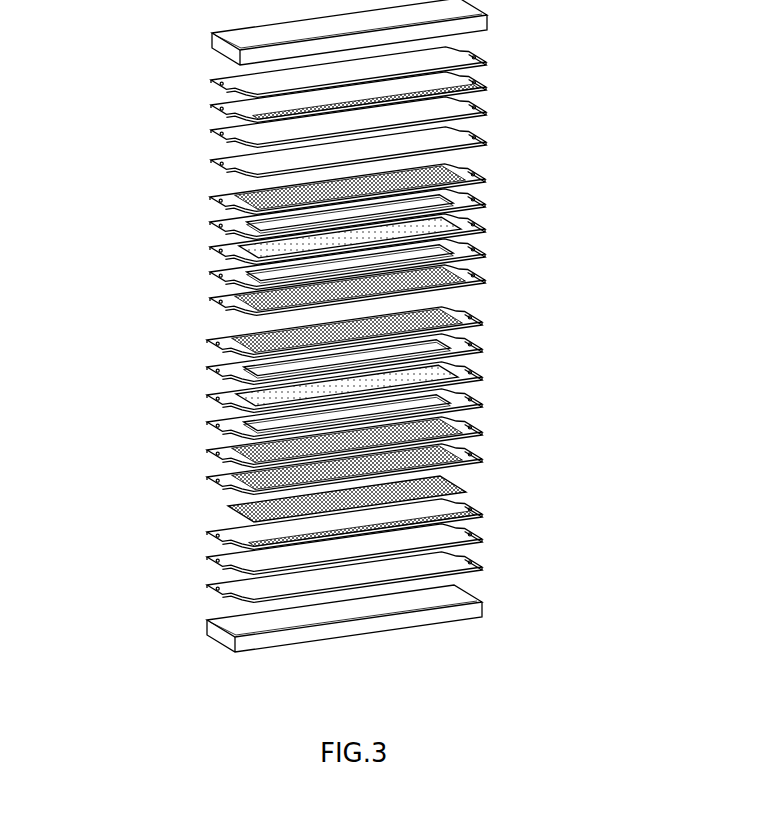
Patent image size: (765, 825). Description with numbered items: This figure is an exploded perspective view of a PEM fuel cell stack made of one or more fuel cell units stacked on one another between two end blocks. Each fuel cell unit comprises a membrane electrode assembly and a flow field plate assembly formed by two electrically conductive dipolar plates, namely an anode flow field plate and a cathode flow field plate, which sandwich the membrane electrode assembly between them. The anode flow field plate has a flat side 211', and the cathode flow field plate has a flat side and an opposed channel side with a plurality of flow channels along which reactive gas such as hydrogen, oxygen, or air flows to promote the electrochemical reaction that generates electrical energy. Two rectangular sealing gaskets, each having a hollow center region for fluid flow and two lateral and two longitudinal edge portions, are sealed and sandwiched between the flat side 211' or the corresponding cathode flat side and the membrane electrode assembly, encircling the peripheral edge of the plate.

The flat side of anode flow field plate 211' is at (403, 479).